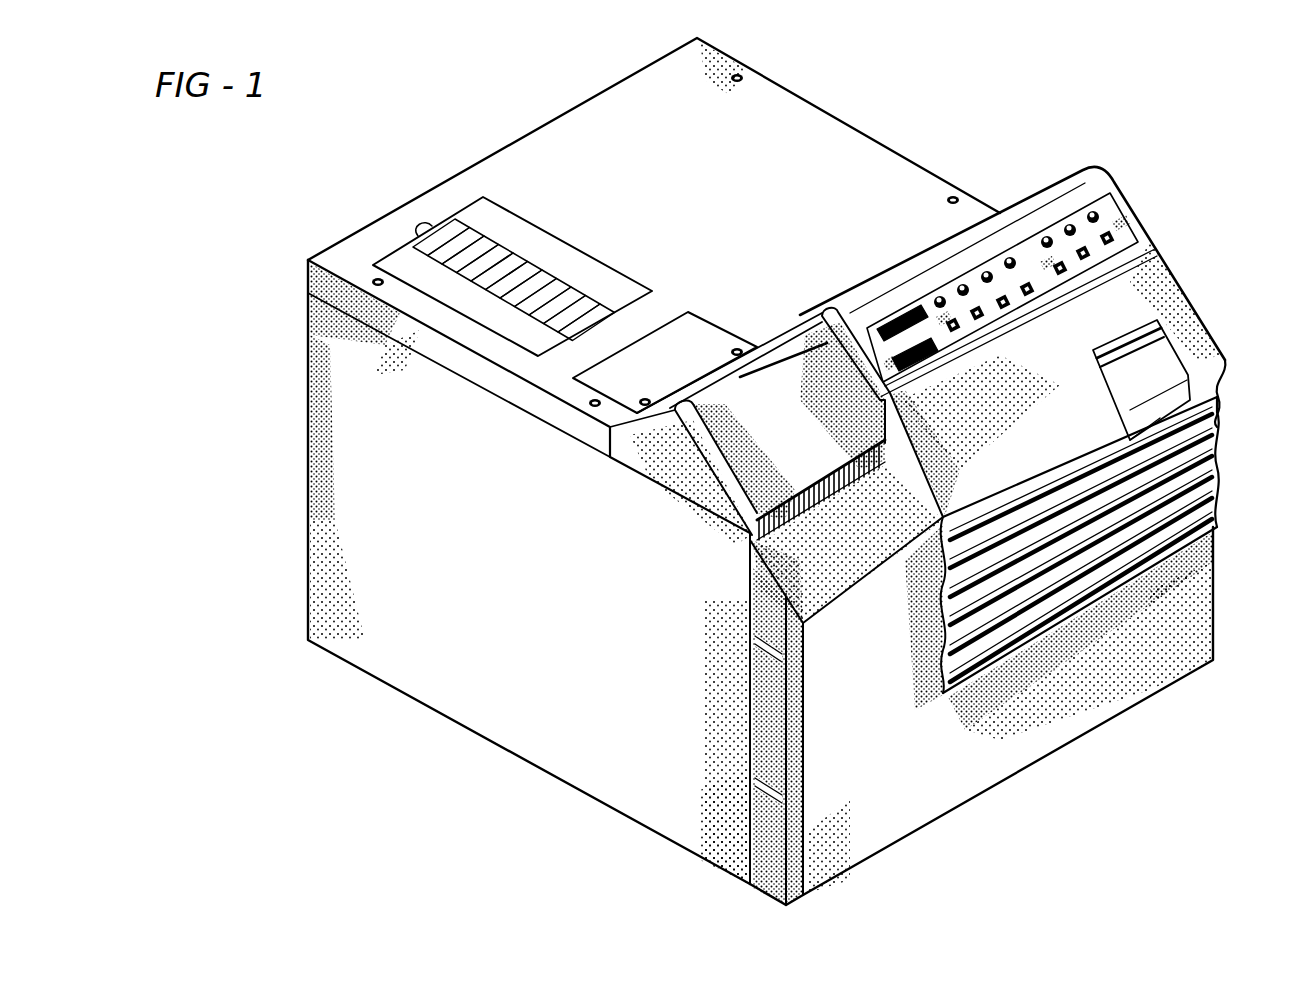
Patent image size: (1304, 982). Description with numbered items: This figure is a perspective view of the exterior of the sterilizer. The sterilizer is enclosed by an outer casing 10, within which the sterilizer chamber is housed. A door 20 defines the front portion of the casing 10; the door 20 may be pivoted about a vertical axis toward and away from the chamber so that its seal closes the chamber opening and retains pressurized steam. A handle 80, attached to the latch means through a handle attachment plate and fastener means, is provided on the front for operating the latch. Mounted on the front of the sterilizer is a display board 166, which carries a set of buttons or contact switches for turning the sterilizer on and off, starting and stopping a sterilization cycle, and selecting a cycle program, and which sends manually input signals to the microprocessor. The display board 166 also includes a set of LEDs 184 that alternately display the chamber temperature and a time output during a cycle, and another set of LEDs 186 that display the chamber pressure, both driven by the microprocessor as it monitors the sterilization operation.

The outer casing 10 is at (486, 747).
The door 20 is at (1052, 728).
The handle 80 is at (1117, 372).
The display board 166 is at (1117, 217).
The set of LEDs 184 is at (887, 313).
The set of LEDs 186 is at (940, 360).